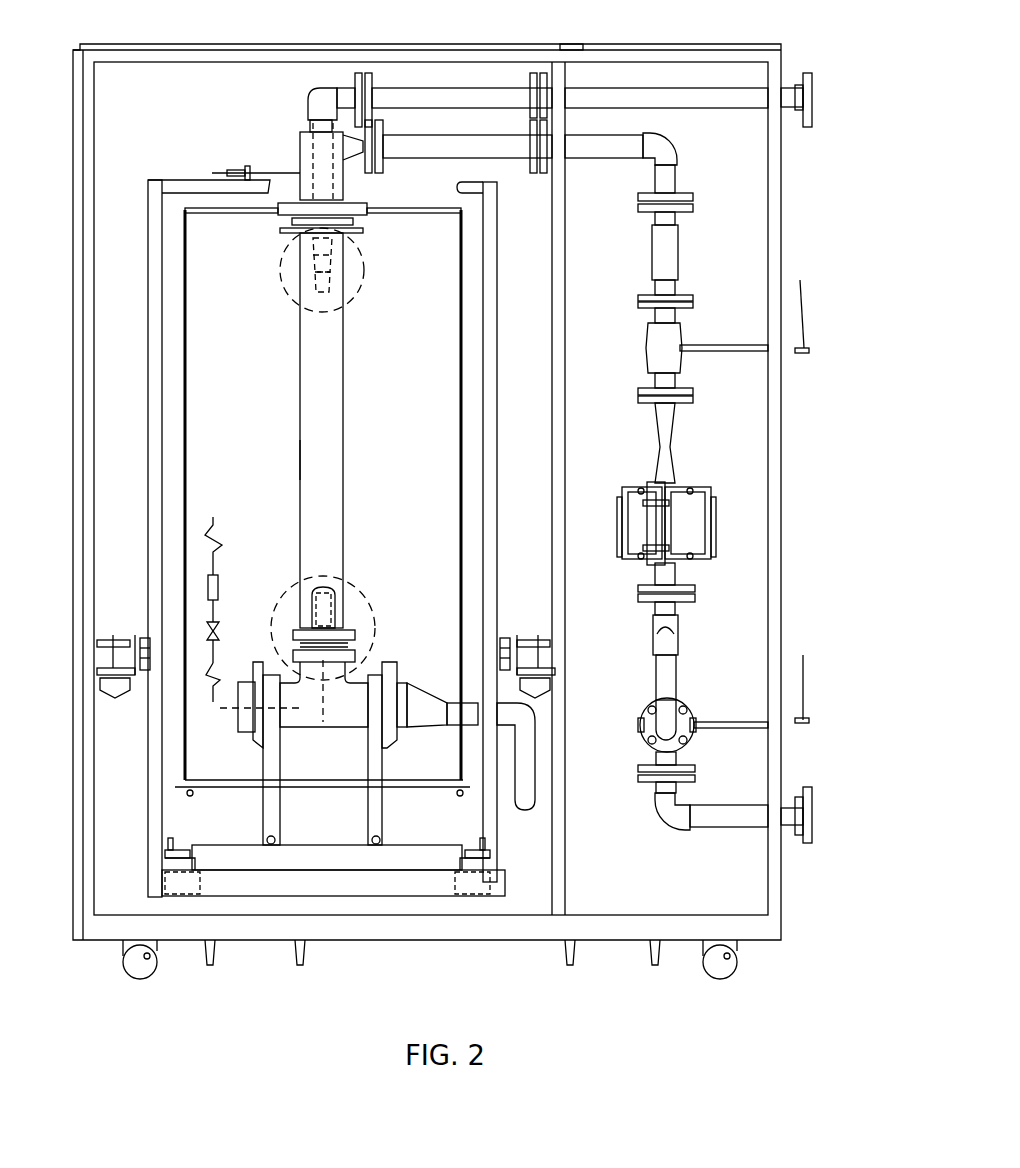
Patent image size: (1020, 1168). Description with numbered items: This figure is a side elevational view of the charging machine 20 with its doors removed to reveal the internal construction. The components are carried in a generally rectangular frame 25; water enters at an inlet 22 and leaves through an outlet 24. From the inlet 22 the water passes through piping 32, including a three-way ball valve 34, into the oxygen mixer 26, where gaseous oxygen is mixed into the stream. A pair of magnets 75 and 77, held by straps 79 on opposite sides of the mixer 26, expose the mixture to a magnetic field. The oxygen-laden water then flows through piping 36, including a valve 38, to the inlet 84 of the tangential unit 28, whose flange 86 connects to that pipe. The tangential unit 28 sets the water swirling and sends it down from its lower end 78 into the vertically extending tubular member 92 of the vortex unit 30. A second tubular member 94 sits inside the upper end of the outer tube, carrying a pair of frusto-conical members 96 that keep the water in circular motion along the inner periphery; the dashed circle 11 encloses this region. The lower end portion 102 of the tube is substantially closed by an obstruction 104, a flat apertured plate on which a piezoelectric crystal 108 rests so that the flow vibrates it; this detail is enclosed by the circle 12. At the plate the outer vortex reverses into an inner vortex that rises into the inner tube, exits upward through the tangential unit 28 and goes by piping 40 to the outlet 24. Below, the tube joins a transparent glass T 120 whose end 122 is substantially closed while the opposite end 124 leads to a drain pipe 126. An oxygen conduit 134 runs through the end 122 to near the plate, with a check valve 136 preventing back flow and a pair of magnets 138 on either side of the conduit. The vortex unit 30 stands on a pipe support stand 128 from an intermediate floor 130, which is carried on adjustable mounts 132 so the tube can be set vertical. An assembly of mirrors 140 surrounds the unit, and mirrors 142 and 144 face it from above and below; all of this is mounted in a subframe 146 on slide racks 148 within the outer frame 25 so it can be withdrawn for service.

The nozzle assembly detail 11 is at (296, 270).
The probe assembly detail 12 is at (376, 613).
The charging machine 20 is at (798, 617).
The inlet 22 is at (815, 820).
The outlet 24 is at (815, 100).
The frame 25 is at (452, 58).
The oxygen mixer 26 is at (670, 478).
The tangential unit 28 is at (298, 150).
The vortex unit 30 is at (348, 460).
The piping 32 is at (665, 682).
The 3-way ball valve 34 is at (685, 722).
The piping 36 is at (660, 178).
The valve 38 is at (672, 340).
The piping 40 is at (683, 103).
The magnet 75 is at (638, 527).
The magnet 77 is at (690, 530).
The lower end 78 is at (300, 205).
The straps 79 is at (702, 560).
The inlet 84 is at (368, 152).
The flange 86 is at (386, 165).
The tubular member 92 is at (345, 325).
The tubular member 94 is at (312, 296).
The frusto-conical members 96 is at (335, 275).
The lower end portion 102 is at (347, 606).
The obstruction 104 is at (357, 645).
The piezoelectric crystal 108 is at (325, 588).
The T 120 is at (294, 713).
The end 122 is at (285, 712).
The end 124 is at (365, 705).
The drain pipe 126 is at (530, 770).
The pipe support stand 128 is at (385, 770).
The intermediate floor 130 is at (400, 855).
The adjustable mounts 132 is at (490, 858).
The oxygen conduit 134 is at (218, 515).
The check valve 136 is at (222, 668).
The magnets 138 is at (222, 585).
The assembly of mirrors 140 is at (458, 360).
The mirror 142 is at (420, 215).
The mirror 144 is at (343, 840).
The subframe 146 is at (160, 478).
The slide racks 148 is at (141, 636).